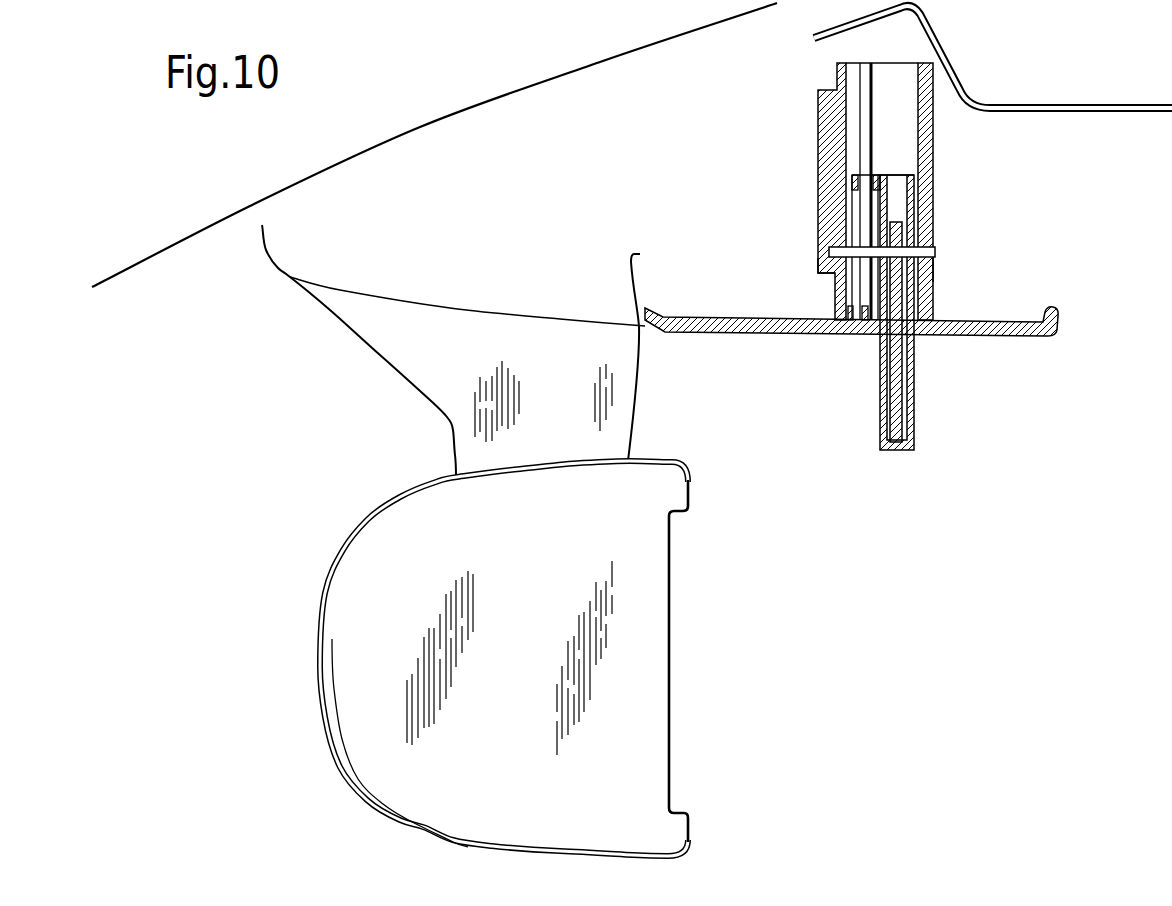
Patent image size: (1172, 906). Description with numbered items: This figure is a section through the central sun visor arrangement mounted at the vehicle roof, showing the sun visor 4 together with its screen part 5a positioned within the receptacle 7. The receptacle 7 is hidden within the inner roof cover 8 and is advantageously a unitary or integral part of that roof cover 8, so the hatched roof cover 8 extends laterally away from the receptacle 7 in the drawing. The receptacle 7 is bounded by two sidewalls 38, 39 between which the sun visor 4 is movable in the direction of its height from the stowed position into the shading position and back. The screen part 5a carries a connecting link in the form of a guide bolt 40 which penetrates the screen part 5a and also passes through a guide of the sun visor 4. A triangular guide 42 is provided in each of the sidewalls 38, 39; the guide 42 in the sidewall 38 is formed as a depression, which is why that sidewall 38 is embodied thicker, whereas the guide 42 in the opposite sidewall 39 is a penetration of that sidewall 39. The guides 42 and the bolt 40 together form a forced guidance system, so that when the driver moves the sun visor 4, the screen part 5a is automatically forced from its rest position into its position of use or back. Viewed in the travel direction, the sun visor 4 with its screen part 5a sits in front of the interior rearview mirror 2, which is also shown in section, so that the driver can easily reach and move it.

The interior rearview mirror 2 is at (490, 792).
The sun visor 4 is at (879, 356).
The screen part 5a is at (892, 392).
The receptacle 7 is at (830, 115).
The inner roof cover 8 is at (691, 318).
The sidewall 38 is at (835, 174).
The sidewall 39 is at (927, 174).
The guide bolt 40 is at (922, 253).
The triangular guide 42 is at (823, 271).